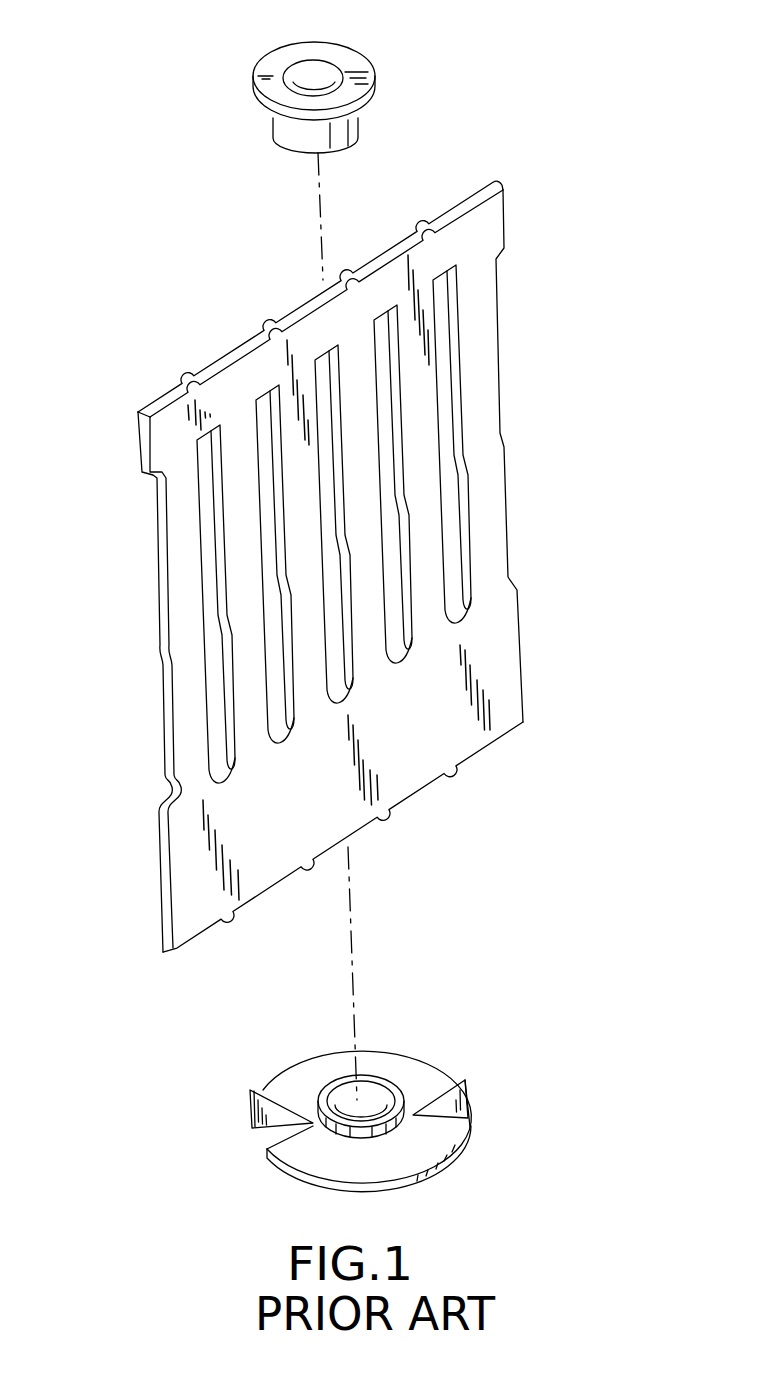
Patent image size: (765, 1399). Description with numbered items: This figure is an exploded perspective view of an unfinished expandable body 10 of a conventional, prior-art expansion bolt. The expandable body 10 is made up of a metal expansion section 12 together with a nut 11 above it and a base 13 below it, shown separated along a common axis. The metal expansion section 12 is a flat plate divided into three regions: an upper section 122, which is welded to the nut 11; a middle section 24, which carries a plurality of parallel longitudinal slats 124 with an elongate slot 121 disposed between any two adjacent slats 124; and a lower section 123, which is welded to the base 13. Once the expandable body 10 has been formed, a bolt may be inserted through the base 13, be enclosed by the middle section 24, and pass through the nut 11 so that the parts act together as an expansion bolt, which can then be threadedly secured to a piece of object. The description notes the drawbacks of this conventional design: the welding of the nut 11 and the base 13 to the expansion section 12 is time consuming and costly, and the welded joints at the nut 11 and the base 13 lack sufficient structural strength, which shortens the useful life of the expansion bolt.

The expandable body 10 is at (552, 367).
The nut 11 is at (385, 107).
The metal expansion section 12 is at (155, 637).
The base 13 is at (423, 1070).
The middle section 24 is at (187, 723).
The elongate slot 121 is at (210, 603).
The upper section 122 is at (380, 250).
The lower section 123 is at (407, 802).
The parallel longitudinal slats 124 is at (487, 493).